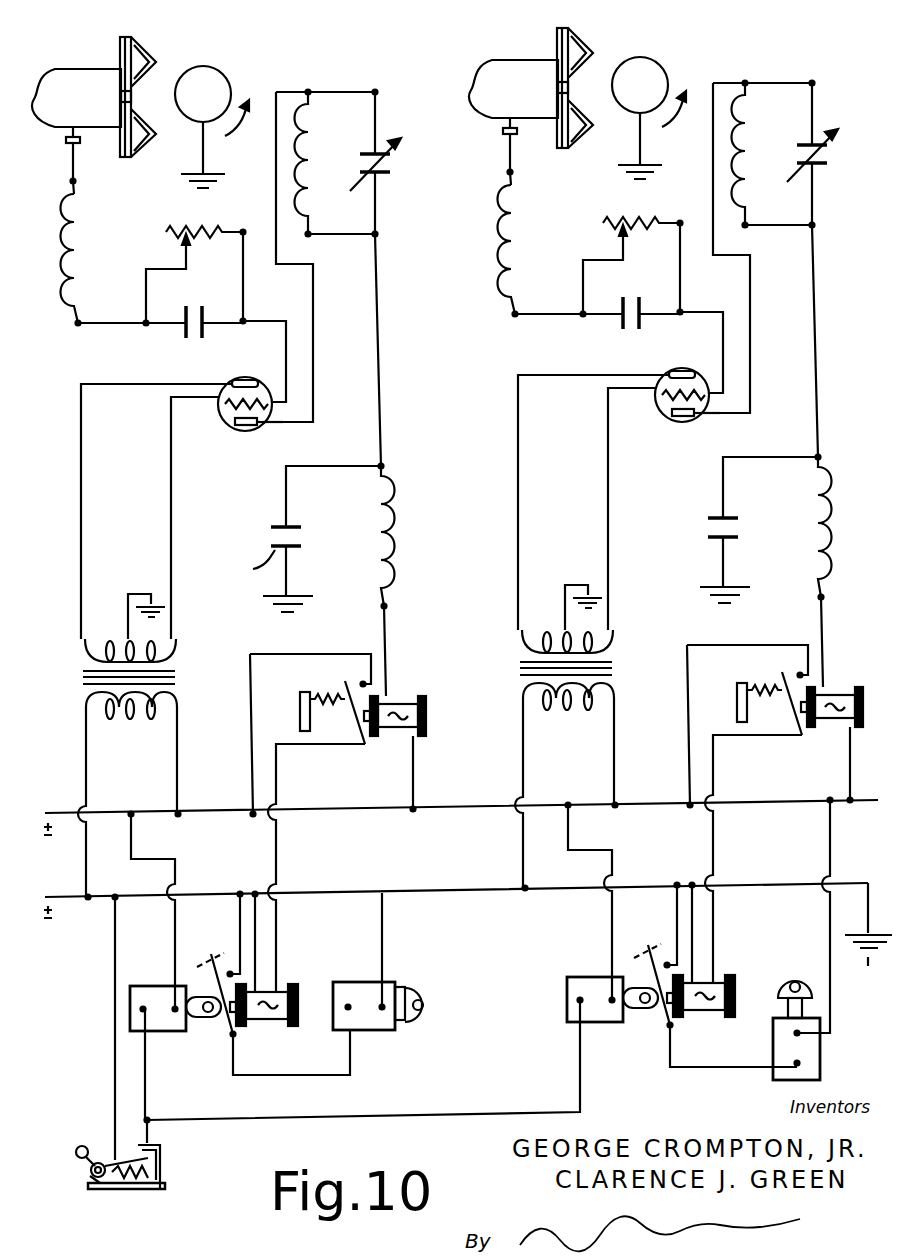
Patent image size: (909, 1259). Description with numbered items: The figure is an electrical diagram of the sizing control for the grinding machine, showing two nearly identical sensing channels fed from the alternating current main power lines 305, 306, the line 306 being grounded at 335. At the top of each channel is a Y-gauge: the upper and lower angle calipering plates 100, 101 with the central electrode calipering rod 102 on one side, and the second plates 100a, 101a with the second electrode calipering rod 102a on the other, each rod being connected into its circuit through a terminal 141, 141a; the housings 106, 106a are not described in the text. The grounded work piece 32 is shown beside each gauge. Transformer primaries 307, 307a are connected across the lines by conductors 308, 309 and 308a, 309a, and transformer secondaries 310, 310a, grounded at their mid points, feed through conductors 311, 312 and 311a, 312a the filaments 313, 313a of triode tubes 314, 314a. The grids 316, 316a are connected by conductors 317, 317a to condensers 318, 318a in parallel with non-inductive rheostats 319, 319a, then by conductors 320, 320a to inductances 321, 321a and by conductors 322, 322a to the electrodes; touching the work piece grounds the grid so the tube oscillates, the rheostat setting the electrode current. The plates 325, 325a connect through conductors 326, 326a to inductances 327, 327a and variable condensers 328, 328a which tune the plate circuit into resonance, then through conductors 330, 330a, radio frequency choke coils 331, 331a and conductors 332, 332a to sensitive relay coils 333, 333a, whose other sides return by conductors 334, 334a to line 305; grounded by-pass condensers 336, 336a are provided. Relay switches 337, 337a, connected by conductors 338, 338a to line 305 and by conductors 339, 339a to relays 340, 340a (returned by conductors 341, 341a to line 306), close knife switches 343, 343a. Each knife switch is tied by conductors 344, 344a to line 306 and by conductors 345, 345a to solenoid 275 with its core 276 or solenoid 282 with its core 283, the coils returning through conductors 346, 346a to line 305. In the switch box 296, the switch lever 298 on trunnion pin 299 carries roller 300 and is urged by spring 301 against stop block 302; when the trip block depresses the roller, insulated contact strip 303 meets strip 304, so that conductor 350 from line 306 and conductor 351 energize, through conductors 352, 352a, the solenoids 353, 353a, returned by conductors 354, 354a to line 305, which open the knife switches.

The work piece 32 is at (648, 68).
The upper angle calipering plate 100 is at (580, 50).
The lower angle calipering plate 101 is at (580, 138).
The electrode calipering rod 102 is at (558, 88).
The photocell housing 106 is at (488, 75).
The terminal 141 is at (503, 131).
The solenoid 275 is at (821, 1055).
The solenoid core 276 is at (778, 1003).
The solenoid 282 is at (367, 1030).
The solenoid core 283 is at (404, 987).
The switch box 296 is at (165, 1170).
The switch lever 298 is at (98, 1147).
The trunnion pin 299 is at (90, 1185).
The roller 300 is at (82, 1152).
The spring 301 is at (160, 1190).
The block 302 is at (117, 1190).
The insulated contact strip 303 is at (140, 1192).
The contact strip 304 is at (148, 1136).
The main power line 305 is at (455, 809).
The main power line 306 is at (460, 890).
The transformer primary 307 is at (566, 709).
The conductor 308 is at (522, 771).
The conductor 309 is at (614, 733).
The transformer secondary 310 is at (544, 630).
The conductor 311 is at (518, 497).
The conductor 312 is at (612, 512).
The filament 313 is at (682, 371).
The triode tube 314 is at (700, 413).
The grid 316 is at (660, 395).
The conductor 317 is at (700, 310).
The condenser 318 is at (622, 318).
The non-inductive rheostat 319 is at (603, 223).
The conductor 320 is at (517, 318).
The inductance 321 is at (527, 240).
The conductor 322 is at (510, 172).
The plate 325 is at (678, 417).
The conductor 326 is at (750, 352).
The inductance 327 is at (758, 138).
The variable condenser 328 is at (818, 170).
The conductor 330 is at (818, 392).
The radio frequency choke coil 331 is at (828, 525).
The conductor 332 is at (826, 645).
The sensitive relay coil 333 is at (845, 686).
The conductor 334 is at (850, 770).
The ground 335 is at (868, 941).
The grounded by-pass condenser 336 is at (712, 541).
The relay switch 337 is at (780, 678).
The conductor 338 is at (687, 660).
The conductor 339 is at (714, 770).
The relay 340 is at (700, 1018).
The conductor 341 is at (700, 935).
The knife switch 343 is at (648, 949).
The conductor 344 is at (676, 912).
The conductor 345 is at (740, 1067).
The conductor 346 is at (830, 950).
The conductor 350 is at (115, 952).
The conductor 351 is at (160, 1150).
The conductor 352 is at (454, 1110).
The solenoid 353 is at (588, 984).
The conductor 354 is at (612, 855).
The second upper angle calipering plate 100a is at (169, 53).
The second lower angle calipering plate 101a is at (138, 148).
The second electrode calipering rod 102a is at (96, 97).
The photocell housing 106a is at (71, 78).
The terminal 141a is at (50, 155).
The transformer primary 307a is at (130, 712).
The conductor 308a is at (115, 810).
The conductor 309a is at (207, 769).
The transformer secondary 310a is at (130, 612).
The conductor 311a is at (156, 511).
The conductor 312a is at (204, 518).
The filament 313a is at (245, 386).
The triode tube 314a is at (292, 436).
The grid 316a is at (221, 423).
The conductor 317a is at (274, 340).
The condenser 318a is at (189, 334).
The non-inductive rheostat 319a is at (178, 259).
The conductor 320a is at (95, 342).
The inductance 321a is at (111, 258).
The conductor 322a is at (47, 200).
The plate 325a is at (217, 447).
The conductor 326a is at (323, 257).
The inductance 327a is at (327, 163).
The variable condenser 328a is at (398, 163).
The conductor 330a is at (409, 351).
The radio frequency choke coil 331a is at (420, 537).
The conductor 332a is at (421, 651).
The sensitive relay coil 333a is at (412, 697).
The conductor 334a is at (451, 774).
The grounded by-pass condenser 336a is at (292, 539).
The relay switch 337a is at (310, 699).
The conductor 338a is at (226, 720).
The conductor 339a is at (316, 868).
The relay 340a is at (264, 1026).
The conductor 341a is at (300, 942).
The knife switch 343a is at (208, 982).
The conductor 344a is at (211, 934).
The conductor 345a is at (337, 1076).
The conductor 346a is at (380, 938).
The conductor 352a is at (147, 1103).
The solenoid 353a is at (175, 1029).
The conductor 354a is at (189, 911).